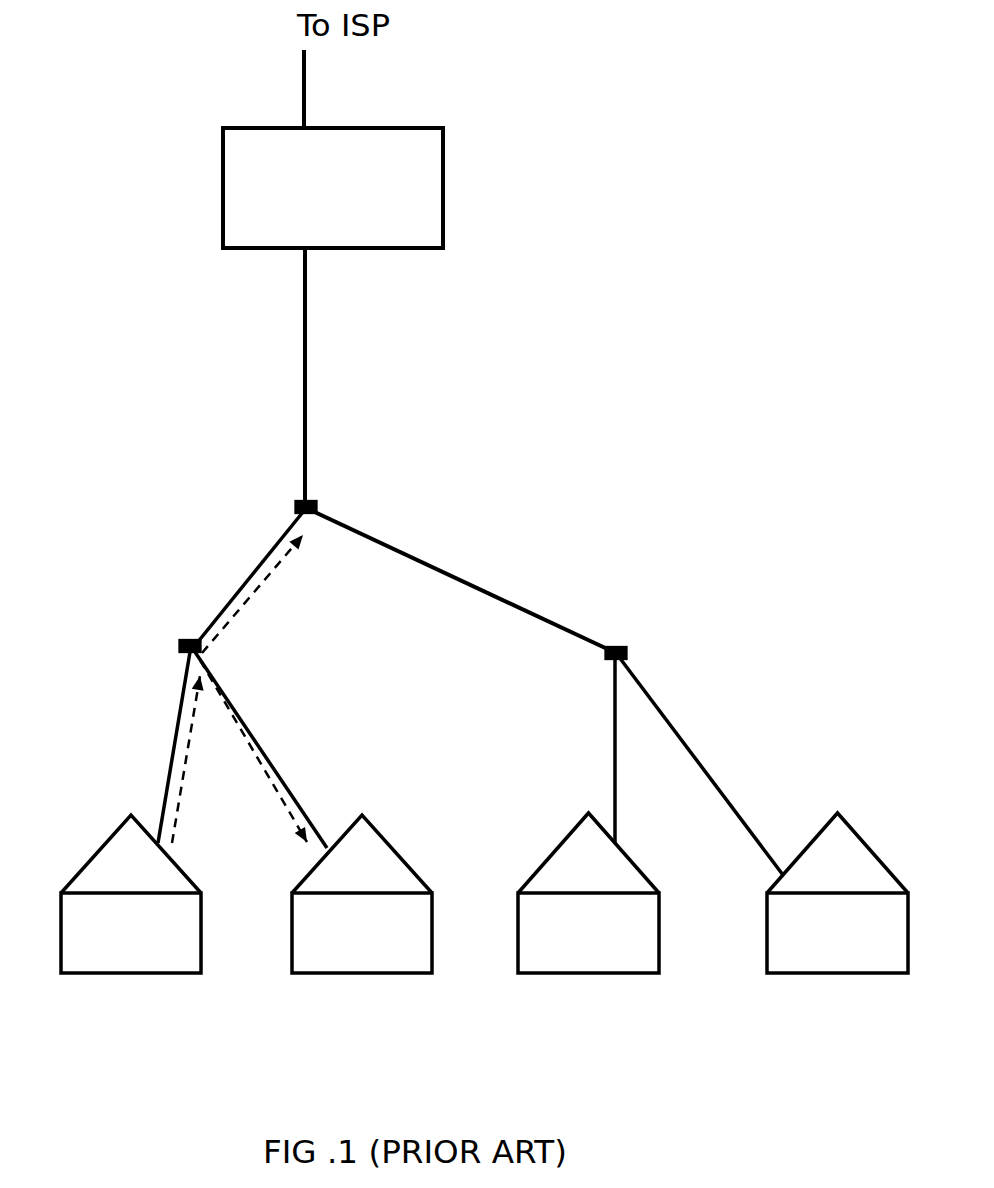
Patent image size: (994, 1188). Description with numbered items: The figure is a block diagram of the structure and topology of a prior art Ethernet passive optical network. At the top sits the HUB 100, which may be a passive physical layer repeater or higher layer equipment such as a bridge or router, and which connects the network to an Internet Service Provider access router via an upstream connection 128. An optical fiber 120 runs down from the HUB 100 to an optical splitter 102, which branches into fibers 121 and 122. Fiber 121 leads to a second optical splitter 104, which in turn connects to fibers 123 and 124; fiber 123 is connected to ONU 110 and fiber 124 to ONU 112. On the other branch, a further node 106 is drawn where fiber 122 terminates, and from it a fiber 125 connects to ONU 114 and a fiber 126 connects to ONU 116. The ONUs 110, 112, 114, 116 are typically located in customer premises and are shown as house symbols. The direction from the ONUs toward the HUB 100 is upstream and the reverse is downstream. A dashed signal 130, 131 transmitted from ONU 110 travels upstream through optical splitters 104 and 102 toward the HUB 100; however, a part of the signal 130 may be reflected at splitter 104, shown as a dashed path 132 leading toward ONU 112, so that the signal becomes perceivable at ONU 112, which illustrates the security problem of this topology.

The HUB 100 is at (222, 198).
The optical splitter 102 is at (297, 503).
The optical splitter 104 is at (180, 650).
The network node 106 is at (620, 645).
The optical network unit 110 is at (132, 973).
The optical network unit 112 is at (372, 973).
The optical network unit 114 is at (598, 973).
The optical network unit 116 is at (855, 975).
The optical fiber 120 is at (304, 357).
The fiber 121 is at (258, 563).
The fiber 122 is at (437, 568).
The fiber 123 is at (170, 772).
The fiber 124 is at (271, 762).
The fiber 125 is at (612, 747).
The fiber 126 is at (695, 755).
The upstream connection 128 is at (300, 100).
The signal 130 is at (180, 817).
The signal 131 is at (243, 598).
The downstream traffic path 132 is at (245, 744).